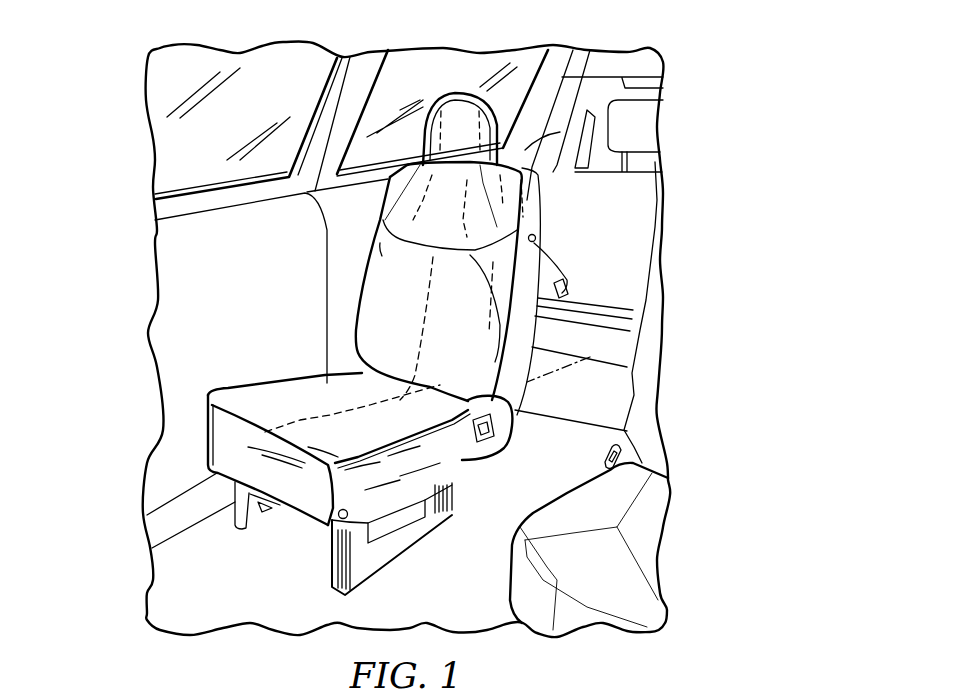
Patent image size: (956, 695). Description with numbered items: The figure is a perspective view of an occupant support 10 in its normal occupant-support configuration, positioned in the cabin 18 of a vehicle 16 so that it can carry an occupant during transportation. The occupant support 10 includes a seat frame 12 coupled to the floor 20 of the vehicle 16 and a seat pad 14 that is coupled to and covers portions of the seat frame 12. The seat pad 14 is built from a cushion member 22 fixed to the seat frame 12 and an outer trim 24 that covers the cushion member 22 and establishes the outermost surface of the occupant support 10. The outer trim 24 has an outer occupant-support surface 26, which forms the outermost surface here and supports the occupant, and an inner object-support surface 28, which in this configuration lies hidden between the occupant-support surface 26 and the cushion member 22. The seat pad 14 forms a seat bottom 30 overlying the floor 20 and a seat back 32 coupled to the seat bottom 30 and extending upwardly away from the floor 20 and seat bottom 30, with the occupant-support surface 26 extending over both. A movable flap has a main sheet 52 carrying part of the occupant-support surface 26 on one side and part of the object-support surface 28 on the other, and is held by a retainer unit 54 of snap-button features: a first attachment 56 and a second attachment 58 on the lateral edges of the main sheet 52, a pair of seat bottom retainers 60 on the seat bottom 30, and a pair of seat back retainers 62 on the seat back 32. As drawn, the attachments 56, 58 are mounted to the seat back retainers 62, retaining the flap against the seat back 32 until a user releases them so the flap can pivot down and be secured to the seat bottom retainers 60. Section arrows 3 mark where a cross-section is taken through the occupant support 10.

The occupant support 10 is at (463, 69).
The seat frame 12 is at (413, 541).
The seat pad 14 is at (243, 265).
The vehicle 16 is at (637, 60).
The cabin 18 is at (290, 74).
The floor 20 is at (173, 590).
The cushion member 22 is at (292, 498).
The outer trim 24 is at (203, 423).
The outer occupant-support surface 26 is at (380, 300).
The inner object-support surface 28 is at (363, 318).
The seat bottom 30 is at (503, 458).
The seat back 32 is at (543, 257).
The main sheet 52 is at (633, 333).
The retainer unit 54 is at (537, 168).
The first attachment 56 is at (535, 235).
The second attachment 58 is at (367, 226).
The seat bottom retainers 60 is at (203, 455).
The seat back retainers 62 is at (391, 187).
The section line 3 is at (197, 495).